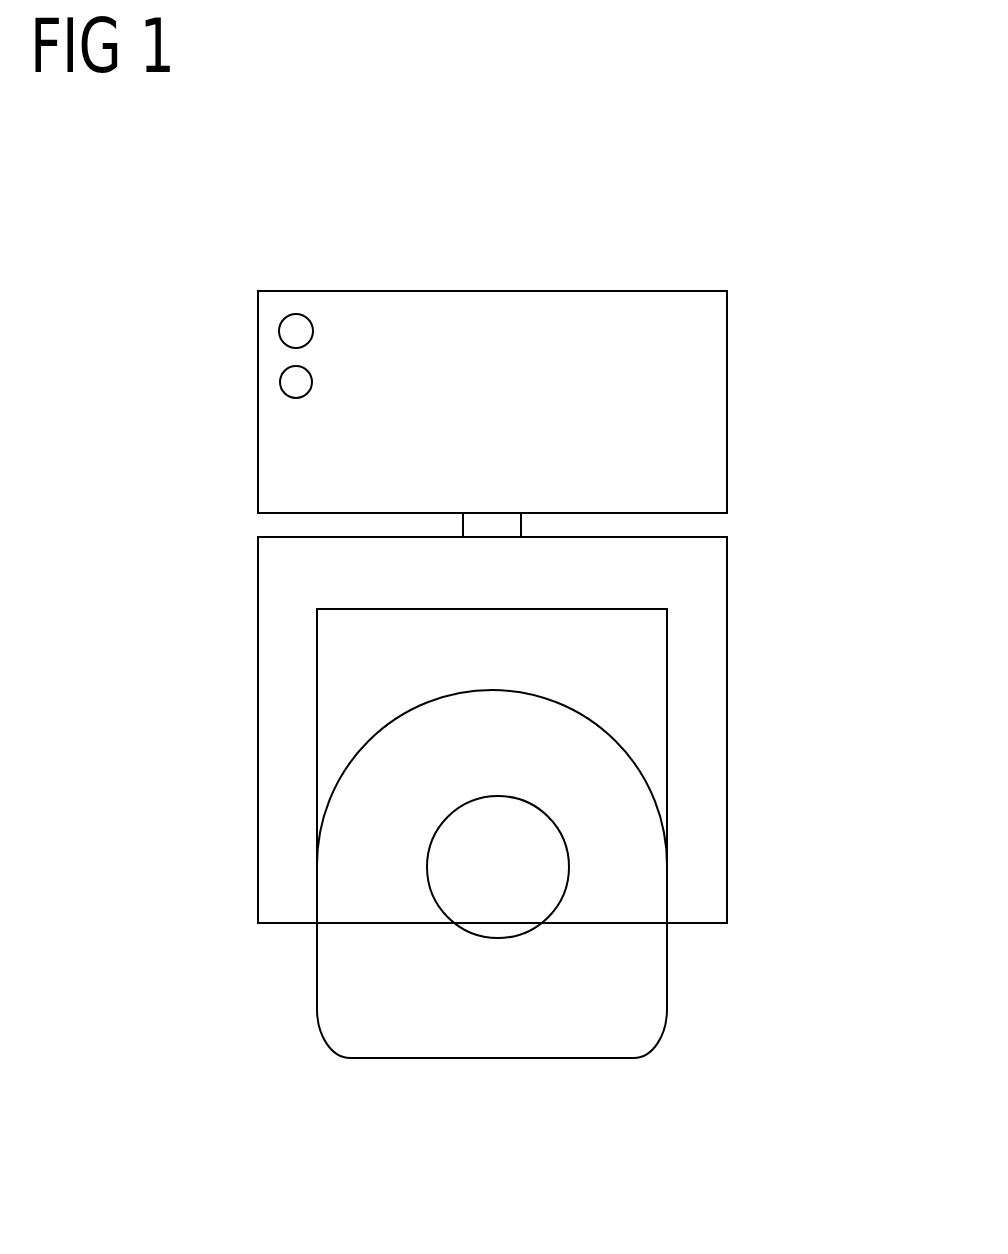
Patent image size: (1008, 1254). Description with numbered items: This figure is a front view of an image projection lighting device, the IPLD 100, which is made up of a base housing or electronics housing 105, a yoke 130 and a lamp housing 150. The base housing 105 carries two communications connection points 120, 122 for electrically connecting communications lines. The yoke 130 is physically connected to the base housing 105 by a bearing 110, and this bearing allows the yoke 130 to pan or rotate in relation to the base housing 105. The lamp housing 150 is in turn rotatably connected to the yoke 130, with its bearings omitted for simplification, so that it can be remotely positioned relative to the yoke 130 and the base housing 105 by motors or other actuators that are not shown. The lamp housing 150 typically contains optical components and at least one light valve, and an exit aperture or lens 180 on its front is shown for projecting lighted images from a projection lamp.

The IPLD 100 is at (805, 355).
The base housing 105 is at (325, 273).
The bearing 110 is at (490, 518).
The communications connection point 120 is at (272, 339).
The communications connection point 122 is at (272, 389).
The yoke 130 is at (233, 743).
The lamp housing 150 is at (625, 727).
The exit aperture or lens 180 is at (590, 876).